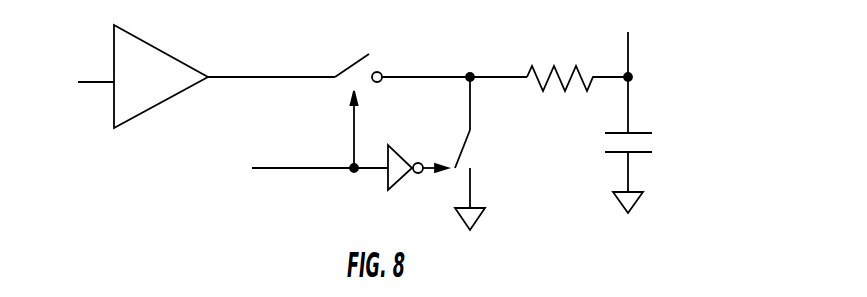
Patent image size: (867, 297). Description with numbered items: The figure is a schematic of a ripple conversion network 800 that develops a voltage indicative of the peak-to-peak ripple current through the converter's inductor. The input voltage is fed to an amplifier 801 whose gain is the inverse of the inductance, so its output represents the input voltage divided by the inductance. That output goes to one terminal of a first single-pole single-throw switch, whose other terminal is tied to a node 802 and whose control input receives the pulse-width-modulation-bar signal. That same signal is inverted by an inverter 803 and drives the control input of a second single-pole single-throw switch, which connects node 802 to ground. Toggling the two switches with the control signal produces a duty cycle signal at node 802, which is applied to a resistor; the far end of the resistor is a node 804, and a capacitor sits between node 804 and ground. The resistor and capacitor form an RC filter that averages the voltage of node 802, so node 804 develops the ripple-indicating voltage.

The ripple conversion network 800 is at (150, 196).
The amplifier 801 is at (158, 48).
The node 802 is at (470, 73).
The inverter 803 is at (399, 159).
The node 804 is at (632, 74).